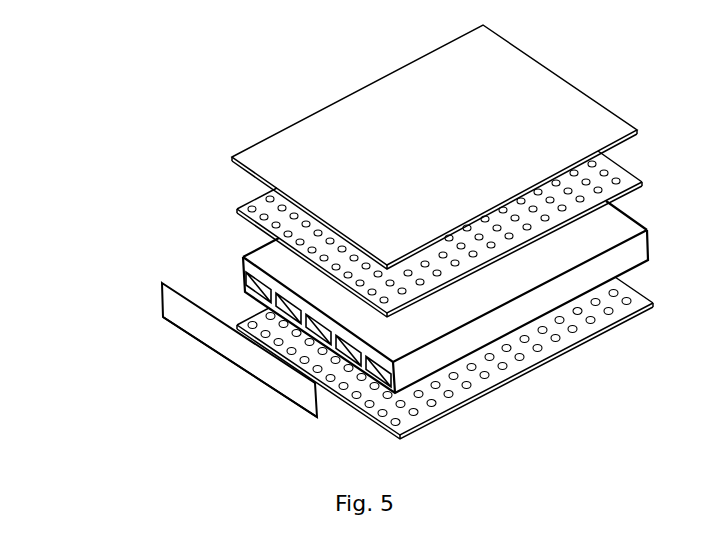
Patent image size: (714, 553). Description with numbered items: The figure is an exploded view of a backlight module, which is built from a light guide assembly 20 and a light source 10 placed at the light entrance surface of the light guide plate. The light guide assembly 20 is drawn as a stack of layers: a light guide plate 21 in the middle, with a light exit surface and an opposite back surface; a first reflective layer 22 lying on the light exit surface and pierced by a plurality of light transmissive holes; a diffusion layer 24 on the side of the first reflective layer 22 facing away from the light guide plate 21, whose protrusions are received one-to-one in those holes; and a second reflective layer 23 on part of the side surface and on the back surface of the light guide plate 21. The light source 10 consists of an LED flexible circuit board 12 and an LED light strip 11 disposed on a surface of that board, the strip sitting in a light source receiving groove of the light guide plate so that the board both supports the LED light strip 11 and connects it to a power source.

The light source 10 is at (92, 233).
The LED light strip 11 is at (183, 288).
The LED flexible circuit board 12 is at (203, 330).
The light guide assembly 20 is at (199, 89).
The light guide plate 21 is at (243, 257).
The first reflective layer 22 is at (237, 210).
The second reflective layer 23 is at (237, 325).
The diffusion layer 24 is at (302, 150).